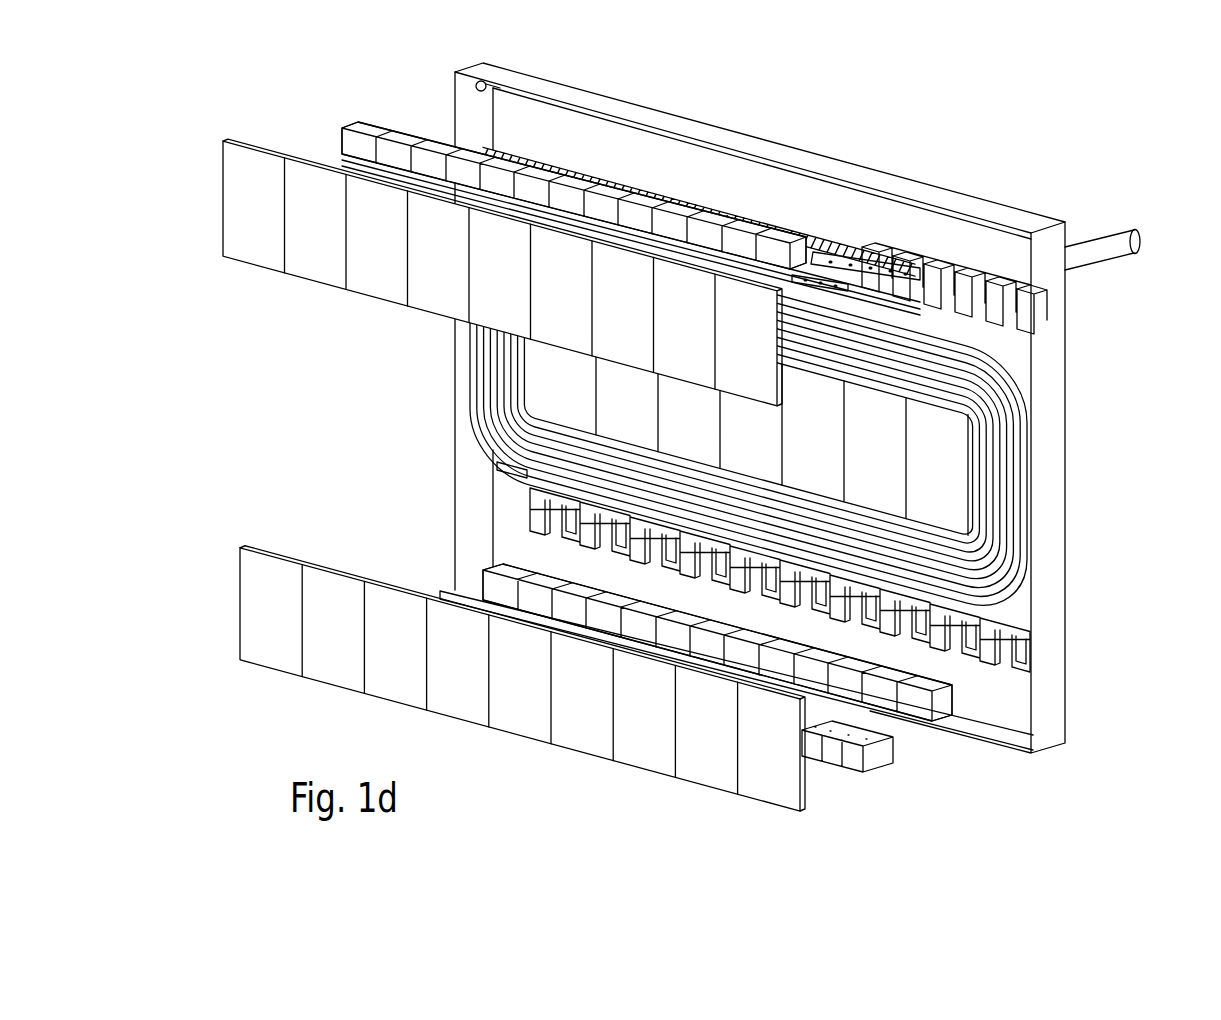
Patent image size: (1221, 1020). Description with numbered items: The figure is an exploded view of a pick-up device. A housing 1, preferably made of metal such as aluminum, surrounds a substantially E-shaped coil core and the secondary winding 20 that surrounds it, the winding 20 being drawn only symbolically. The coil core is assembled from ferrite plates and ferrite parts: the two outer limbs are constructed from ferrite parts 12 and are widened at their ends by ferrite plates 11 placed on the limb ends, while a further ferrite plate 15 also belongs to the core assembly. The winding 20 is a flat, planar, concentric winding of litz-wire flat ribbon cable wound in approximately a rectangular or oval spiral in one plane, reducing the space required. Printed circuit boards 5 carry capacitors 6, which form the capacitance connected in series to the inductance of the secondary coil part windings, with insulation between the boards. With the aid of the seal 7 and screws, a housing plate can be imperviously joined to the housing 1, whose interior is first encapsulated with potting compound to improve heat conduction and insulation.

The housing 1 is at (957, 200).
The printed circuit board 5 is at (912, 722).
The capacitors 6 is at (835, 275).
The seal 7 is at (542, 97).
The ferrite plate 11 is at (703, 750).
The ferrite part 12 is at (1013, 642).
The ferrite plate 15 is at (870, 468).
The winding made of litz-wire flat ribbon cable 20 is at (1017, 477).